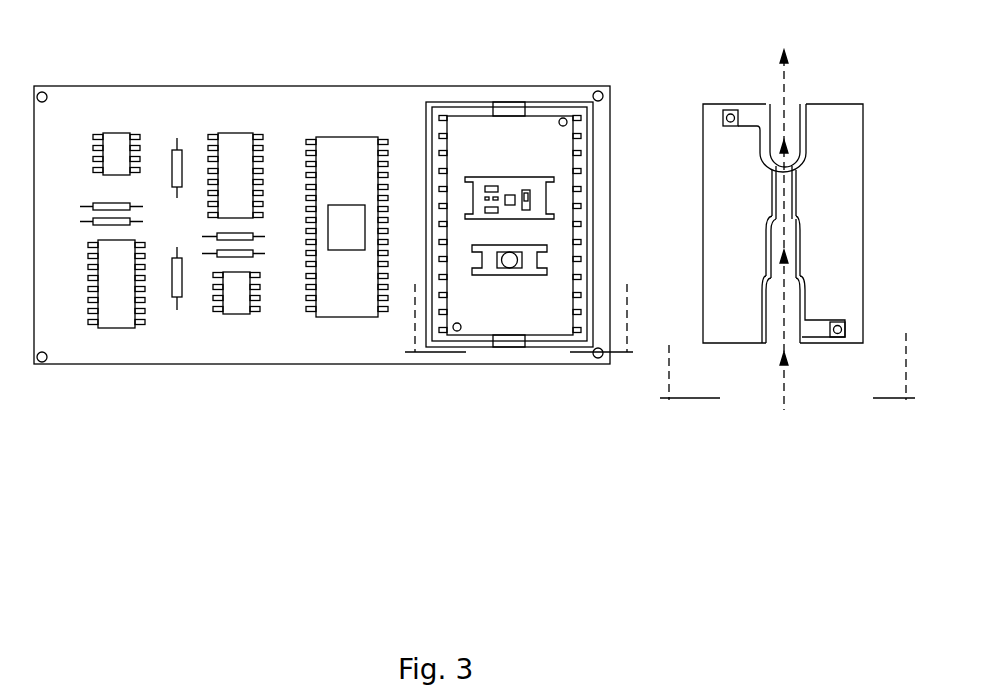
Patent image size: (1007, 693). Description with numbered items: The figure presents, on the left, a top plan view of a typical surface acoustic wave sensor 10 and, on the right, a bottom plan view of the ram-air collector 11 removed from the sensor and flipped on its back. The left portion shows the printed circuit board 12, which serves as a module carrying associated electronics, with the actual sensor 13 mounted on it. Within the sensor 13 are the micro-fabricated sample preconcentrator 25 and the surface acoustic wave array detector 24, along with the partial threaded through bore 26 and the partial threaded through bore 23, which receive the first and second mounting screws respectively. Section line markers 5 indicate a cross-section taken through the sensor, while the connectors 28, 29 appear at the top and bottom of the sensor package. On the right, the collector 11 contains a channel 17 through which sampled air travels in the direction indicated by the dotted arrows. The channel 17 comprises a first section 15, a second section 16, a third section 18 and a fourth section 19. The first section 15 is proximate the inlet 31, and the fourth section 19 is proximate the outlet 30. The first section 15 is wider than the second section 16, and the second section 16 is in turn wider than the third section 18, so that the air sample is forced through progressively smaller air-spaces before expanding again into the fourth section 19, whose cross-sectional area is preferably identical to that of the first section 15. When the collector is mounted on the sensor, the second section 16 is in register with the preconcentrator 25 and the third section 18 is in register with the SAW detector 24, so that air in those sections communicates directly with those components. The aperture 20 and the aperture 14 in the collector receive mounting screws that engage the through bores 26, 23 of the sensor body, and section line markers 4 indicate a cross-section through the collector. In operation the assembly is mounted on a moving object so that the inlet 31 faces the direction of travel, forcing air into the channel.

The surface acoustic wave sensor 10 is at (589, 481).
The ram-air collector 11 is at (728, 336).
The printed circuit board 12 is at (196, 340).
The sensor 13 is at (549, 316).
The aperture 14 is at (838, 337).
The first section 15 is at (785, 308).
The second section 16 is at (785, 243).
The channel 17 is at (805, 212).
The third section 18 is at (785, 195).
The fourth section 19 is at (785, 141).
The aperture 20 is at (731, 114).
The partial threaded through bore 23 is at (456, 331).
The surface acoustic wave array detector 24 is at (517, 180).
The micro-fabricated sample preconcentrator 25 is at (493, 250).
The partial threaded through bore 26 is at (563, 118).
The connector 28 is at (509, 110).
The connector 29 is at (511, 341).
The outlet 30 is at (795, 100).
The inlet 31 is at (793, 345).
The section line 4- 4 is at (787, 353).
The section line 5- 5 is at (519, 306).